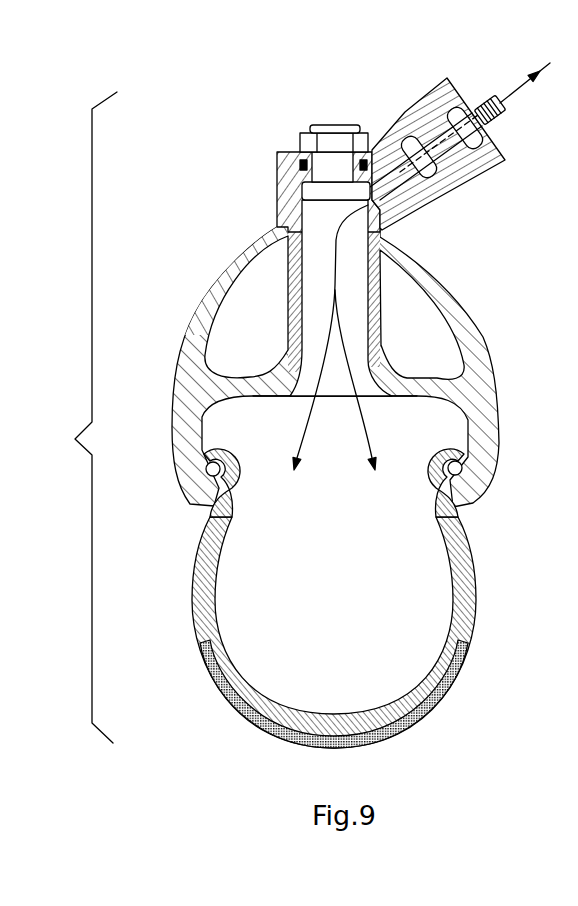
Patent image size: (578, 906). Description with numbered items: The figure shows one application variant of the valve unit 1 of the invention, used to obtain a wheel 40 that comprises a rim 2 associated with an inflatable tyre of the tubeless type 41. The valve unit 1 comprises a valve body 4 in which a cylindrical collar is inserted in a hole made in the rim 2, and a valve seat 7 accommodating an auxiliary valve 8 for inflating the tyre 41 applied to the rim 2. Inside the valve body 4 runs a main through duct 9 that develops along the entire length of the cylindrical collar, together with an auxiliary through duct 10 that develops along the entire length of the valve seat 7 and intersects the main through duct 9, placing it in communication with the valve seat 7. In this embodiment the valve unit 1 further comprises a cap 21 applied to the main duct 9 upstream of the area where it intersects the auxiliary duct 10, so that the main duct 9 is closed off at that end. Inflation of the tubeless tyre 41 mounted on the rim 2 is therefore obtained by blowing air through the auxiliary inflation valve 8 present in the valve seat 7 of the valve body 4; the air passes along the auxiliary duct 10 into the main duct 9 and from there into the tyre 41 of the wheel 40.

The valve unit 1 is at (355, 402).
The rim 2 is at (475, 337).
The valve body 4 is at (303, 186).
The valve seat 7 is at (450, 162).
The auxiliary valve 8 is at (452, 147).
The main through duct 9 is at (313, 213).
The auxiliary through duct 10 is at (398, 185).
The cap 21 is at (333, 170).
The wheel 40 is at (75, 439).
The inflatable tyre of the tubeless type 41 is at (465, 573).